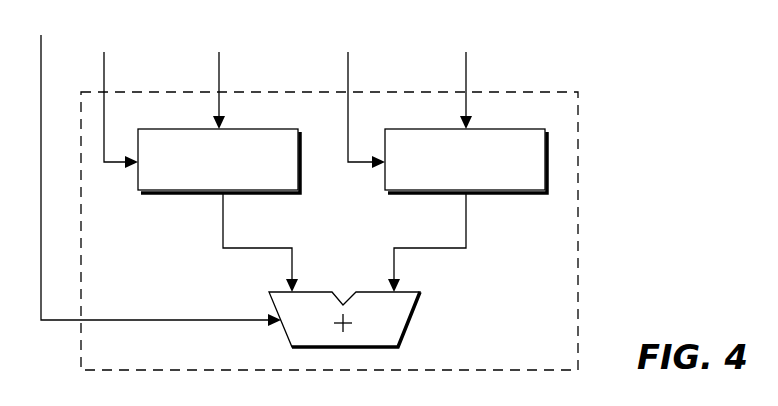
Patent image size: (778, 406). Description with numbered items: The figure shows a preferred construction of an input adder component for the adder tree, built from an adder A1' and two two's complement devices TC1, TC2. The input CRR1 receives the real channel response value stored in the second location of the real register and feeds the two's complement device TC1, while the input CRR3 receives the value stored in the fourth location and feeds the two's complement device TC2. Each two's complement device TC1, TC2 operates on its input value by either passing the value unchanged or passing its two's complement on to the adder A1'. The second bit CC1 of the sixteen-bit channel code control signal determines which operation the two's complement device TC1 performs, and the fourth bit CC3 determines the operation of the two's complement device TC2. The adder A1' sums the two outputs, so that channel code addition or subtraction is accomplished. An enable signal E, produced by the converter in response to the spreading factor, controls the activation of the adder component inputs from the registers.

The enable signal E is at (156, 165).
The second bit of channel code control signal CC1 is at (110, 95).
The input CRR1 is at (219, 76).
The fourth bit of channel code control signal CC3 is at (355, 95).
The input CRR3 is at (462, 76).
The two's complement device TC1 is at (182, 193).
The two's complement device TC2 is at (498, 193).
The adder A1' is at (385, 319).